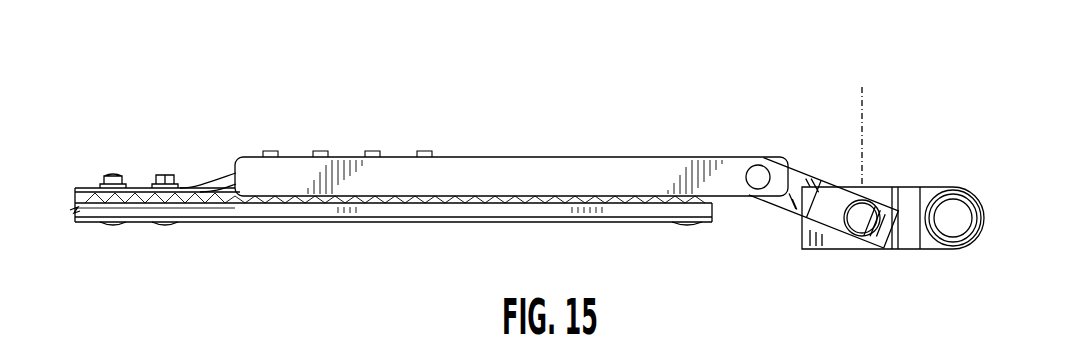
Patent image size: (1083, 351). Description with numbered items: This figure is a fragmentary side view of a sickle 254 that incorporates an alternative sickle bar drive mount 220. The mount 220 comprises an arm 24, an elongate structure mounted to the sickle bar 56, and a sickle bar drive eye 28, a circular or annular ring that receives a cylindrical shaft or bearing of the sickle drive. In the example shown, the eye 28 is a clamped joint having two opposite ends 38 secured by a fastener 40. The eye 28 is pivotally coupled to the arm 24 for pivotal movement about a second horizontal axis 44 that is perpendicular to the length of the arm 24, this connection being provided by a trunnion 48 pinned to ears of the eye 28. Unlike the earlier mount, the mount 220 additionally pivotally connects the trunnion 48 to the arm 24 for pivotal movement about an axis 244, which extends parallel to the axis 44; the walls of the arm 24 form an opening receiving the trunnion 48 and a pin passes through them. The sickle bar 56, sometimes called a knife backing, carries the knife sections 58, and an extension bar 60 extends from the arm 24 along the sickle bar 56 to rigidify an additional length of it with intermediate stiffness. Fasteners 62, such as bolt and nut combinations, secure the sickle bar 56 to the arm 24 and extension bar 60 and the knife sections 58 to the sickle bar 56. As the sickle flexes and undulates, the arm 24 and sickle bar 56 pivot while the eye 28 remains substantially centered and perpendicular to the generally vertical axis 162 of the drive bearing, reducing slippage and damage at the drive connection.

The arm 24 is at (535, 157).
The sickle bar drive eye 28 is at (822, 250).
The opposite ends 38 is at (986, 190).
The fastener 40 is at (957, 238).
The second horizontal axis 44 is at (864, 224).
The trunnion 48 is at (803, 205).
The sickle bar 56 is at (403, 217).
The knife sections 58 is at (213, 203).
The extension bar 60 is at (199, 187).
The fasteners 62 is at (165, 174).
The vertical axis 162 is at (863, 132).
The sickle bar drive mount 220 is at (603, 153).
The axis 244 is at (760, 173).
The sickle 254 is at (735, 82).